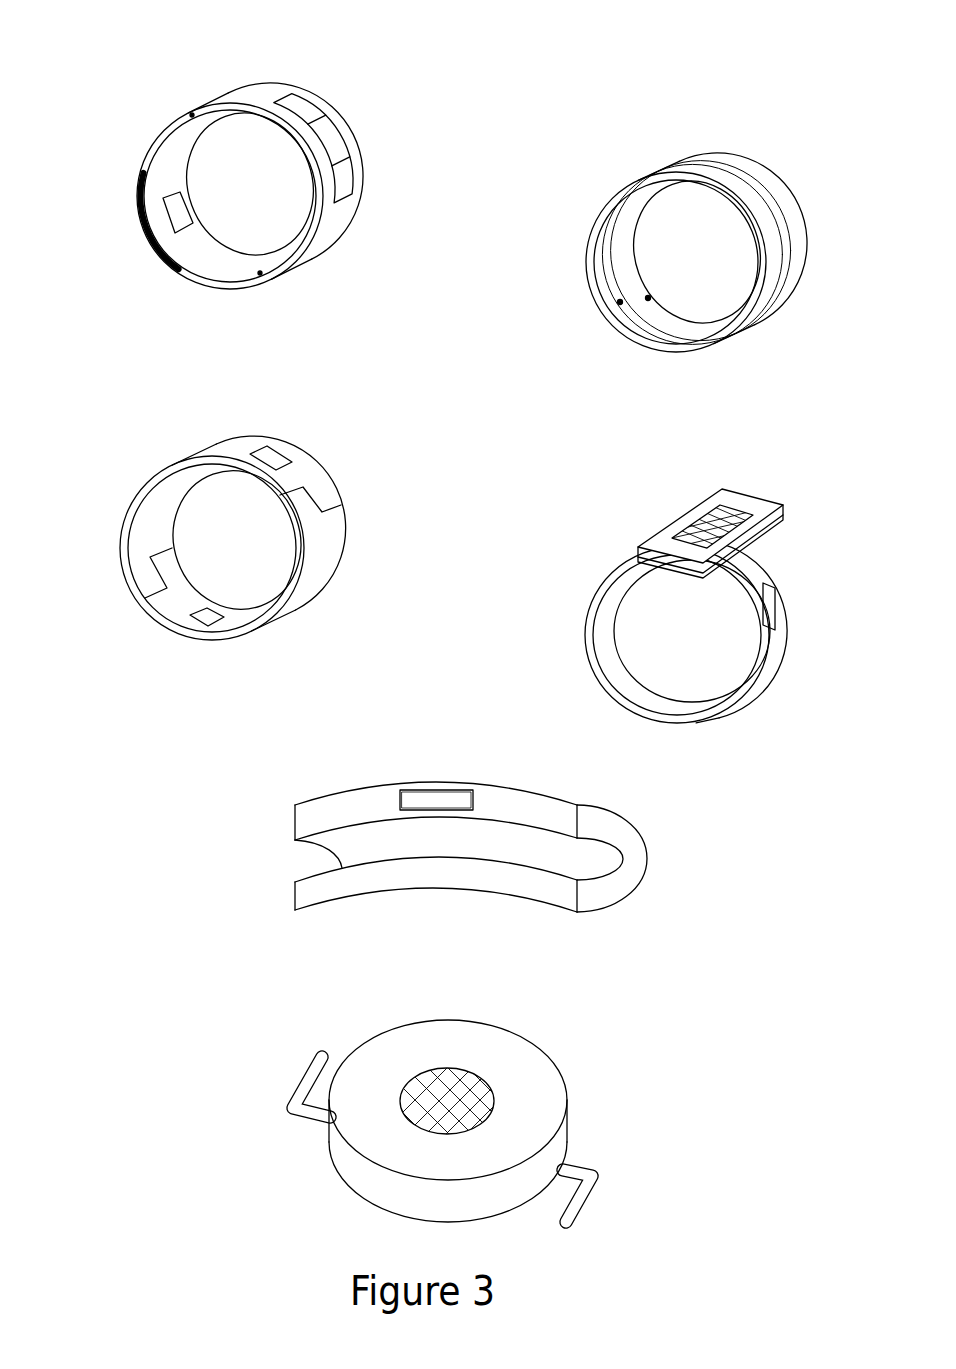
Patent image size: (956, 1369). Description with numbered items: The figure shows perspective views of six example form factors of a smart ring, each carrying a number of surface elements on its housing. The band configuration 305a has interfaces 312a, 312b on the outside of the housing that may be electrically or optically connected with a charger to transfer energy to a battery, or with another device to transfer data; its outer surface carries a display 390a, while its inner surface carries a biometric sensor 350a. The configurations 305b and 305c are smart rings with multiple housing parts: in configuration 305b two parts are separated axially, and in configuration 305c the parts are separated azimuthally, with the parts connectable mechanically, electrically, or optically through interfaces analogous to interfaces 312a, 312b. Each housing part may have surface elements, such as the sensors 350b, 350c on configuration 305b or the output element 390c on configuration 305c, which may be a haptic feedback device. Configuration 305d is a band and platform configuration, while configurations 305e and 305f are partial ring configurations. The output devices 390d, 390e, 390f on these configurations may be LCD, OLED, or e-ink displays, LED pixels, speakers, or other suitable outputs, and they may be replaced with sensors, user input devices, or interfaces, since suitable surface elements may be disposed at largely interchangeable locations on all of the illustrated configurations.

The band configuration of smart ring 305a is at (198, 53).
The interface 312a is at (190, 114).
The interface 312b is at (263, 275).
The display 390a is at (341, 147).
The biometric sensor 350a is at (168, 215).
The multi-part smart ring configuration with axially separate parts 305b is at (603, 150).
The sensor 350b is at (618, 300).
The sensor 350c is at (646, 300).
The multi-part smart ring configuration with azimuthally separate parts 305c is at (154, 433).
The output element 390c is at (281, 456).
The band and platform configuration 305d is at (603, 515).
The output device 390d is at (700, 521).
The partial ring configuration 305e is at (375, 758).
The output device 390e is at (437, 797).
The partial ring configuration 305f is at (379, 1007).
The output device 390f is at (445, 1085).